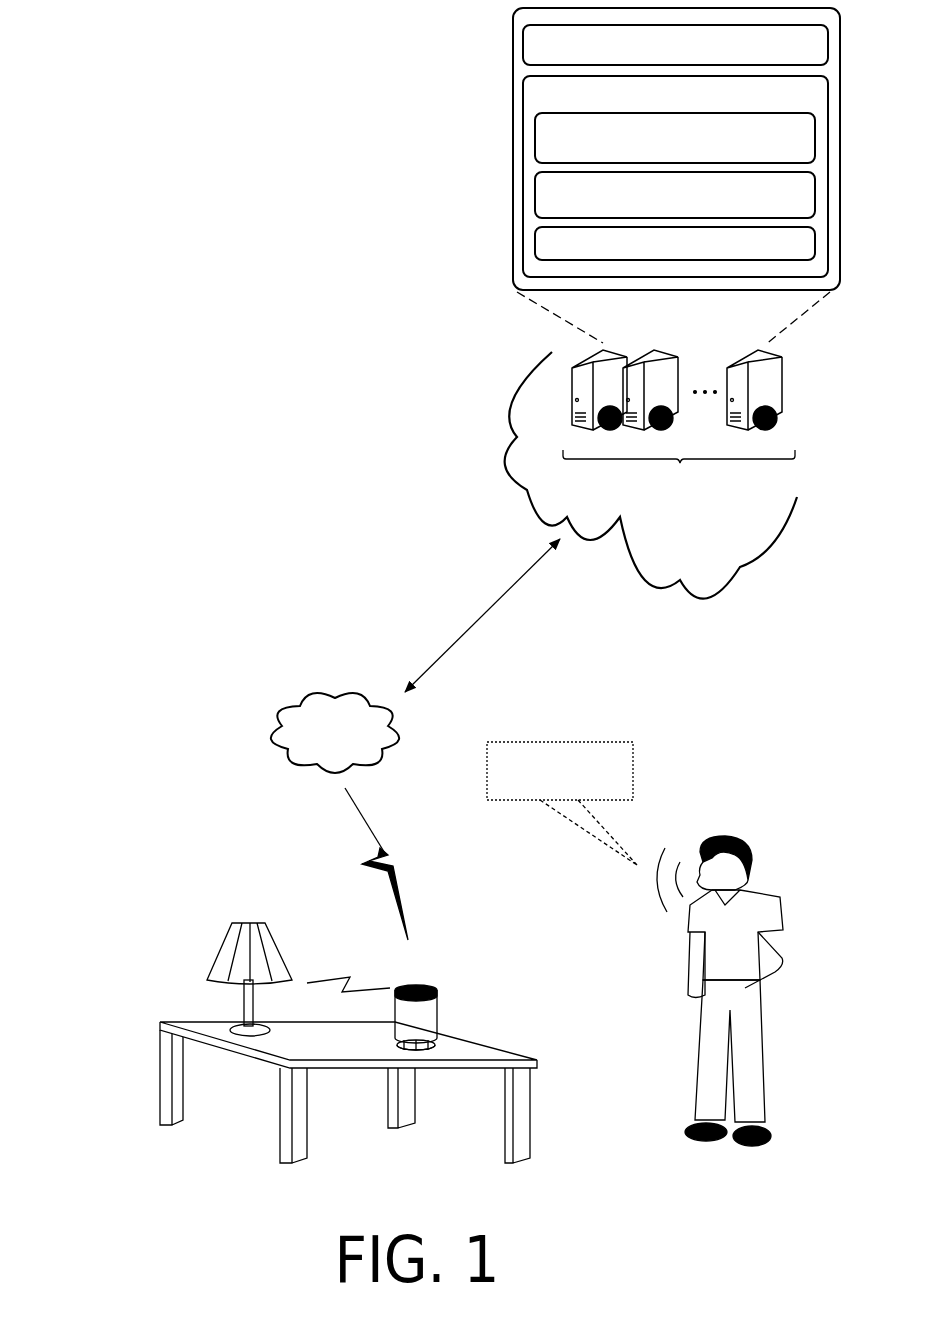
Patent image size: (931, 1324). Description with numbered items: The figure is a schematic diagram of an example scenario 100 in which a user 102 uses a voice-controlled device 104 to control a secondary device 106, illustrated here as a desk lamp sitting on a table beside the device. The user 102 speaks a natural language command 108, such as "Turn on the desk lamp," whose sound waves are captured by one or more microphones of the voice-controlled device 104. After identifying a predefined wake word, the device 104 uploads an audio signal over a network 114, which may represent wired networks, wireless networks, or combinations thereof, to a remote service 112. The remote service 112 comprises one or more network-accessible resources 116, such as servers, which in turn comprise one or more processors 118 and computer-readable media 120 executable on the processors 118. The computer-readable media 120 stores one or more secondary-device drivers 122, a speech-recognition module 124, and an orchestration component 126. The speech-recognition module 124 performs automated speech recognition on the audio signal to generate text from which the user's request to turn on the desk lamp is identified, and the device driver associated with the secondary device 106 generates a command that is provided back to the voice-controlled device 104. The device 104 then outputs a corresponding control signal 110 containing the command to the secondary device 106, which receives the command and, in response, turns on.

The example scenario 100 is at (118, 730).
The user 102 is at (738, 1163).
The voice-controlled device 104 is at (438, 982).
The secondary device 106 is at (203, 988).
The natural language command 108 is at (633, 762).
The control signal 110 is at (347, 943).
The remote service 112 is at (493, 378).
The network 114 is at (335, 733).
The network-accessible resources 116 is at (679, 432).
The processors 118 is at (675, 45).
The computer-readable media 120 is at (675, 176).
The secondary-device drivers 122 is at (675, 138).
The speech-recognition module 124 is at (675, 195).
The orchestration component 126 is at (675, 243).